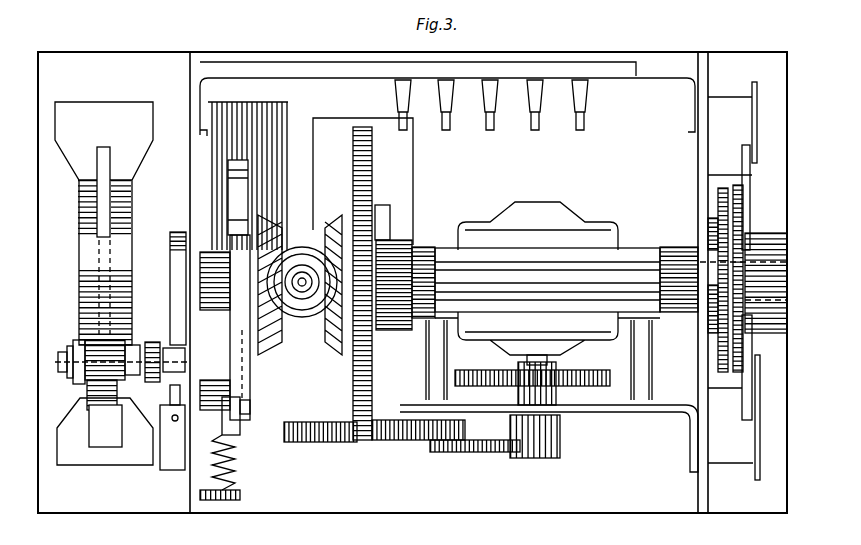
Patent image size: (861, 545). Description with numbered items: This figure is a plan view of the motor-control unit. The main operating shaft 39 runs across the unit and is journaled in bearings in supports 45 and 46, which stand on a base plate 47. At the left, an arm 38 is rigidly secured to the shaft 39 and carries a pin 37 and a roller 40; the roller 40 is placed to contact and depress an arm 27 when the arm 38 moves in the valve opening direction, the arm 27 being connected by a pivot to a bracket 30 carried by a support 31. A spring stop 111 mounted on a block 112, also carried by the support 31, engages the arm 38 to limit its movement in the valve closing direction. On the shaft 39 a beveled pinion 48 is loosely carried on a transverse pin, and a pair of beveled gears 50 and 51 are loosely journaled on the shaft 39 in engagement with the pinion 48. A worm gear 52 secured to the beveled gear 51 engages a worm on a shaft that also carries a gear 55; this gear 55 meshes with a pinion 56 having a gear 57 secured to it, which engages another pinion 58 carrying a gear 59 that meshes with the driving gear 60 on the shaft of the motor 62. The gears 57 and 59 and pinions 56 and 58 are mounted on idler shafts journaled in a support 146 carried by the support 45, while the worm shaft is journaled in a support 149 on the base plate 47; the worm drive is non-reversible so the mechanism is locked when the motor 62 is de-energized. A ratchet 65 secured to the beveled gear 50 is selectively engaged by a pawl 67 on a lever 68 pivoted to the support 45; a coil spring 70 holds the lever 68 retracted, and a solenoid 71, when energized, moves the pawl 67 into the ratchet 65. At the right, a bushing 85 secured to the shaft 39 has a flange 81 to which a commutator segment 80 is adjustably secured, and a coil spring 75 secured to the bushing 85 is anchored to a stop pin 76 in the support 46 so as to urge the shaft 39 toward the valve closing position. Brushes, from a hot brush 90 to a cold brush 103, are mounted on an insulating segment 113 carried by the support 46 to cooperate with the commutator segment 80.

The arm 27 is at (104, 208).
The bracket 30 is at (107, 448).
The support 31 is at (86, 270).
The pin 37 is at (58, 362).
The arm 38 is at (172, 258).
The main operating shaft 39 is at (628, 270).
The roller 40 is at (96, 340).
The support 45 is at (201, 78).
The support 46 is at (699, 486).
The base plate 47 is at (298, 508).
The beveled pinion 48 is at (300, 318).
The beveled gear 50 is at (268, 354).
The beveled gear 51 is at (333, 349).
The worm gear 52 is at (372, 182).
The gear 55 is at (318, 442).
The pinion 56 is at (465, 431).
The gear 57 is at (478, 452).
The pinion 58 is at (560, 450).
The gear 59 is at (600, 372).
The driving gear 60 is at (556, 396).
The motor 62 is at (592, 232).
The ratchet 65 is at (240, 200).
The pawl 67 is at (243, 428).
The lever 68 is at (210, 388).
The coil spring 70 is at (236, 478).
The solenoid 71 is at (288, 116).
The coil spring 75 is at (720, 346).
The pin 76 is at (710, 225).
The commutator segment 80 is at (750, 190).
The flange 81 is at (742, 226).
The bushing 85 is at (778, 333).
The brush 90 is at (760, 471).
The brush 103 is at (756, 84).
The spring stop 111 is at (172, 405).
The block 112 is at (176, 470).
The insulating segment 113 is at (720, 100).
The support 146 is at (629, 412).
The support 149 is at (399, 332).